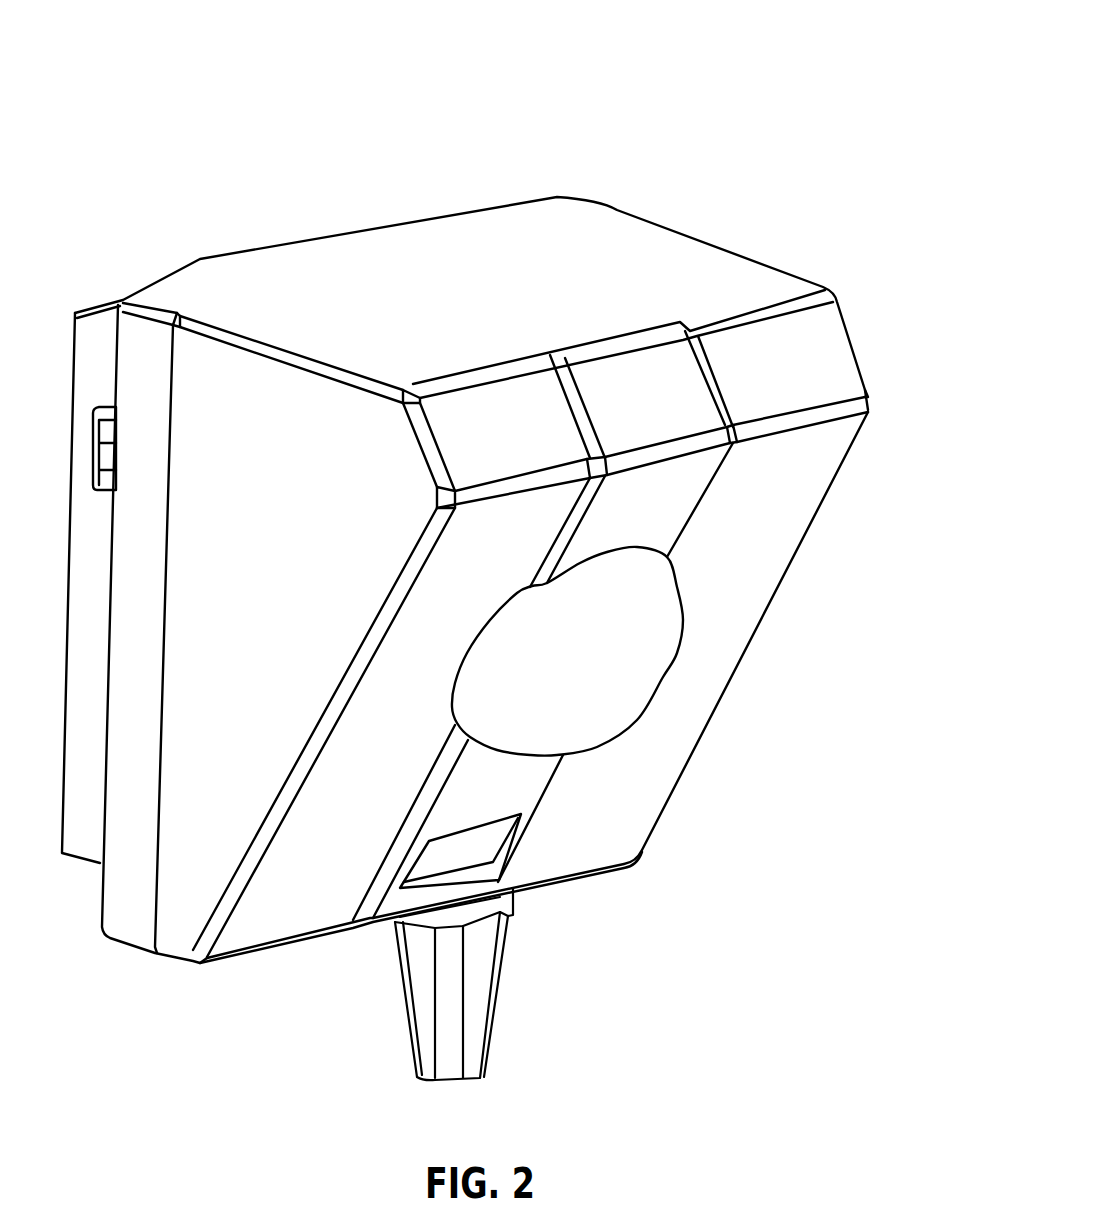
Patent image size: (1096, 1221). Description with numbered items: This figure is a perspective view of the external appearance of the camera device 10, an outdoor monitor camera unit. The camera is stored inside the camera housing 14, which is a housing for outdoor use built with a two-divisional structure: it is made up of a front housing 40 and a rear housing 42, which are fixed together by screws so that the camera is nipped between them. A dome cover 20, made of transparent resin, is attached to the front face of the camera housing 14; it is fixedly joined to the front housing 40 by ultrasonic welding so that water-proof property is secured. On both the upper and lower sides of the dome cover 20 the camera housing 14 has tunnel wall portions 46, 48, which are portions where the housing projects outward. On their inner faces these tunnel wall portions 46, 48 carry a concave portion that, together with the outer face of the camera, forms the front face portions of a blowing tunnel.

The camera device 10 is at (680, 120).
The camera housing 14 is at (690, 263).
The dome cover 20 is at (643, 675).
The front housing 40 is at (490, 277).
The rear housing 42 is at (337, 253).
The tunnel wall portion 46 is at (668, 512).
The tunnel wall portion 48 is at (519, 795).